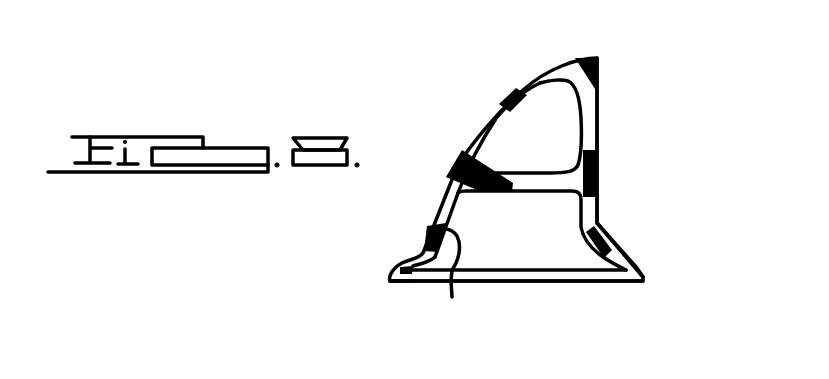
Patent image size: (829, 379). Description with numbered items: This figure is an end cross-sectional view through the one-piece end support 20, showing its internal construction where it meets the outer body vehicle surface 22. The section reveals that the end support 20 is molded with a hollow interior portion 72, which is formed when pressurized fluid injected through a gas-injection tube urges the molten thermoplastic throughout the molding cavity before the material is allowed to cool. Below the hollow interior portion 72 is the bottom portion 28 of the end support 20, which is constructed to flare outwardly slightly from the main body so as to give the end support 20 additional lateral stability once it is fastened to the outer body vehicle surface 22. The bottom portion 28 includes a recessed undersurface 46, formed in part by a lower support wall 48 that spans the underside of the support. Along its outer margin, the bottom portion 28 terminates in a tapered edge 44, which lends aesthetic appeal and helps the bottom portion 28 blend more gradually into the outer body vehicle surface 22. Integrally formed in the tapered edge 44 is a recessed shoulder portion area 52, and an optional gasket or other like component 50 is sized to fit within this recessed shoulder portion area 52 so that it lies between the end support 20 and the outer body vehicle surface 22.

The end support 20 is at (490, 80).
The outer body vehicle surface 22 is at (543, 69).
The hollow interior portion 72 is at (553, 141).
The lower support wall 48 is at (512, 191).
The recessed undersurface 46 is at (463, 275).
The gasket 50 is at (560, 276).
The bottom portion 28 is at (407, 254).
The recessed shoulder portion area 52 is at (411, 275).
The tapered edge 44 is at (633, 265).